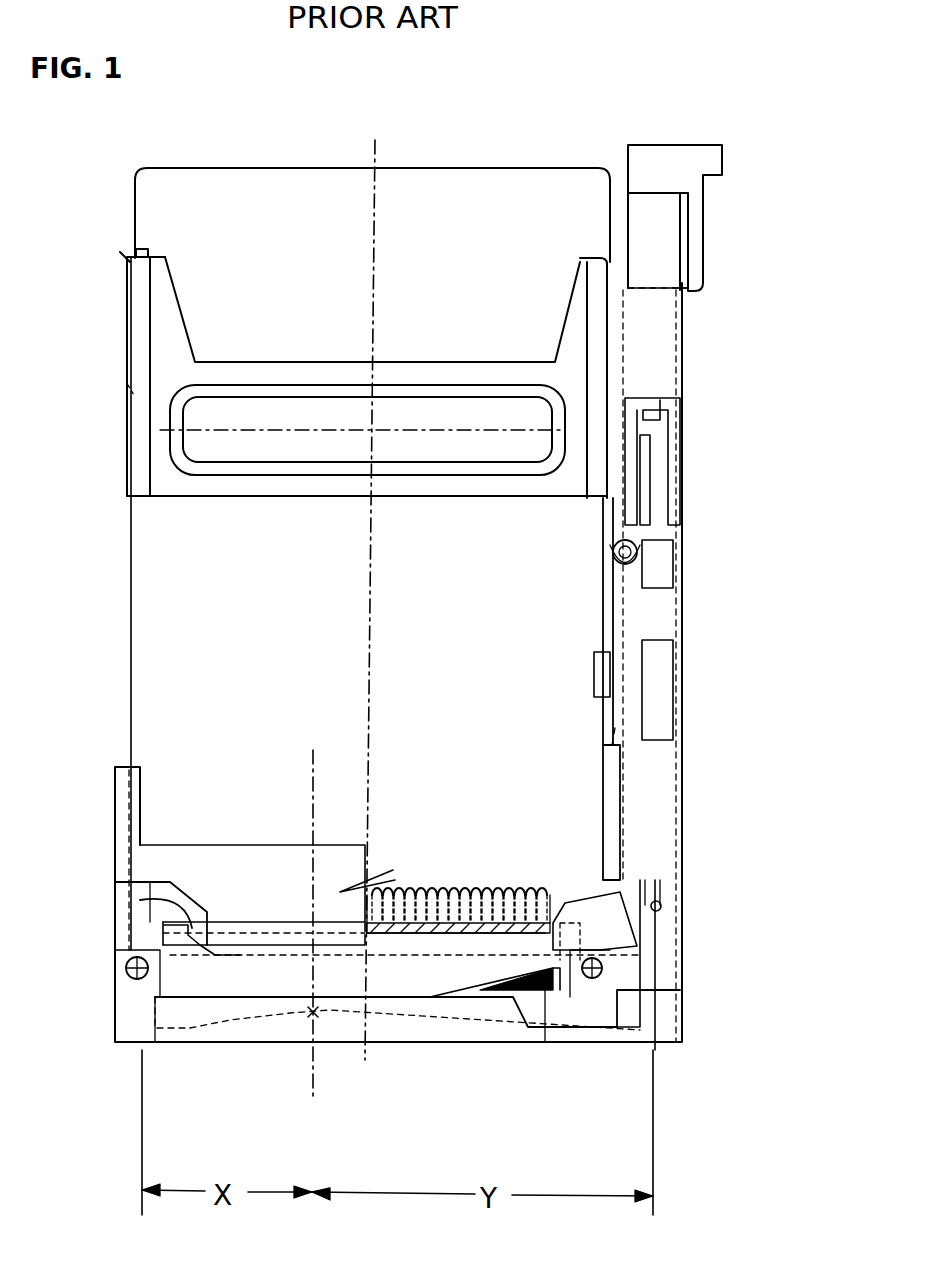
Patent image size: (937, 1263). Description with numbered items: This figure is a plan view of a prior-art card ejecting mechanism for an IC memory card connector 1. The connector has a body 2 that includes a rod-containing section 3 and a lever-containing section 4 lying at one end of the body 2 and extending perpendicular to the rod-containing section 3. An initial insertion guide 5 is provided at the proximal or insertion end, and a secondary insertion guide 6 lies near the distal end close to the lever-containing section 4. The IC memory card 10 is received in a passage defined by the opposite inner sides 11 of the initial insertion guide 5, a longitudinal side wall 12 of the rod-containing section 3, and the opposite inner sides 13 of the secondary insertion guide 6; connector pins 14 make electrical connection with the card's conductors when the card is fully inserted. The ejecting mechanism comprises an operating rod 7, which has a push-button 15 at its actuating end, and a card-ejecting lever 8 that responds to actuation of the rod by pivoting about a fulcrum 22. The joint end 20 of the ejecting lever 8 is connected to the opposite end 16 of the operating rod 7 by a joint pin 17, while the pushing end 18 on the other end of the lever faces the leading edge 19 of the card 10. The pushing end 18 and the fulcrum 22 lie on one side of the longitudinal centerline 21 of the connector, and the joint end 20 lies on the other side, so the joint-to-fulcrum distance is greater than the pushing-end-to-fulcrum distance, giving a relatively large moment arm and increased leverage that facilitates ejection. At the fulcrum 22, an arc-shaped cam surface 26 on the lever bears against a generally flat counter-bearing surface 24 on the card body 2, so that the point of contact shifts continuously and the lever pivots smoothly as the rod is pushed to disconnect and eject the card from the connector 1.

The card connector 1 is at (95, 818).
The body 2 is at (685, 862).
The rod-containing section 3 is at (630, 805).
The lever-containing section 4 is at (468, 1003).
The initial insertion guide 5 is at (280, 368).
The secondary insertion guide 6 is at (270, 880).
The operating rod 7 is at (660, 573).
The card-ejecting lever 8 is at (413, 980).
The IC memory card 10 is at (524, 880).
The inner sides of the initial insertion guide 11 is at (470, 197).
The longitudinal side wall 12 is at (128, 390).
The inner sides of the secondary insertion guide 13 is at (596, 512).
The connector pins 14 is at (585, 836).
The push-button 15 is at (458, 890).
The opposite end of the operating rod 16 is at (680, 170).
The joint pin 17 is at (640, 930).
The pushing end 18 is at (661, 904).
The leading edge 19 is at (150, 912).
The joint end 20 is at (153, 910).
The longitudinal centerline 21 is at (375, 140).
The fulcrum 22 is at (313, 1212).
The counter-bearing surface 24 is at (620, 932).
The second arc-shaped cam surface 26 is at (316, 907).